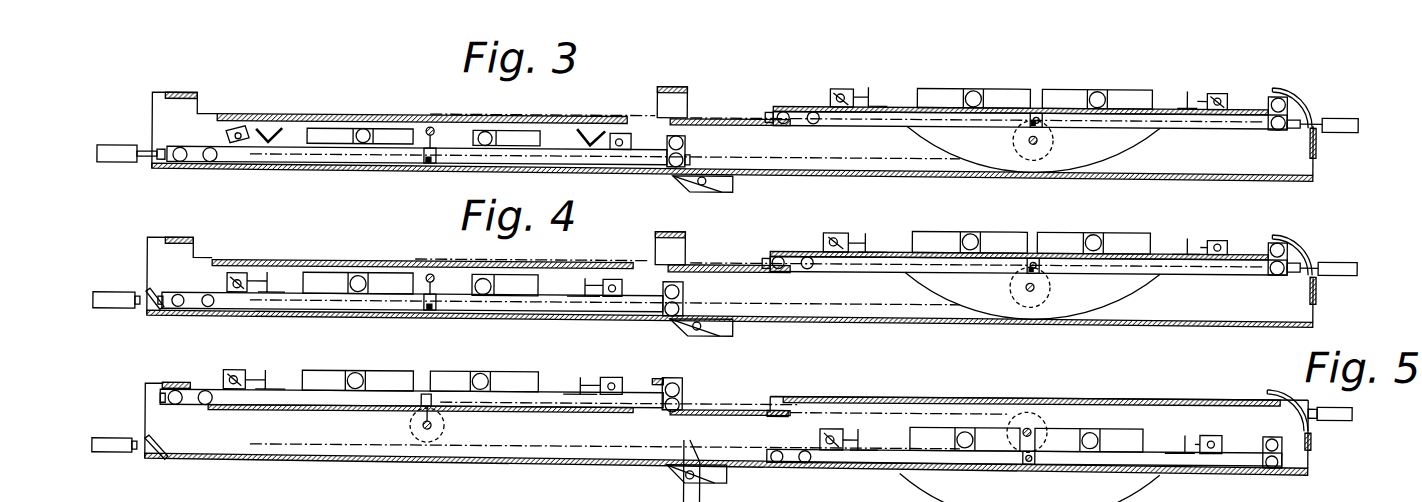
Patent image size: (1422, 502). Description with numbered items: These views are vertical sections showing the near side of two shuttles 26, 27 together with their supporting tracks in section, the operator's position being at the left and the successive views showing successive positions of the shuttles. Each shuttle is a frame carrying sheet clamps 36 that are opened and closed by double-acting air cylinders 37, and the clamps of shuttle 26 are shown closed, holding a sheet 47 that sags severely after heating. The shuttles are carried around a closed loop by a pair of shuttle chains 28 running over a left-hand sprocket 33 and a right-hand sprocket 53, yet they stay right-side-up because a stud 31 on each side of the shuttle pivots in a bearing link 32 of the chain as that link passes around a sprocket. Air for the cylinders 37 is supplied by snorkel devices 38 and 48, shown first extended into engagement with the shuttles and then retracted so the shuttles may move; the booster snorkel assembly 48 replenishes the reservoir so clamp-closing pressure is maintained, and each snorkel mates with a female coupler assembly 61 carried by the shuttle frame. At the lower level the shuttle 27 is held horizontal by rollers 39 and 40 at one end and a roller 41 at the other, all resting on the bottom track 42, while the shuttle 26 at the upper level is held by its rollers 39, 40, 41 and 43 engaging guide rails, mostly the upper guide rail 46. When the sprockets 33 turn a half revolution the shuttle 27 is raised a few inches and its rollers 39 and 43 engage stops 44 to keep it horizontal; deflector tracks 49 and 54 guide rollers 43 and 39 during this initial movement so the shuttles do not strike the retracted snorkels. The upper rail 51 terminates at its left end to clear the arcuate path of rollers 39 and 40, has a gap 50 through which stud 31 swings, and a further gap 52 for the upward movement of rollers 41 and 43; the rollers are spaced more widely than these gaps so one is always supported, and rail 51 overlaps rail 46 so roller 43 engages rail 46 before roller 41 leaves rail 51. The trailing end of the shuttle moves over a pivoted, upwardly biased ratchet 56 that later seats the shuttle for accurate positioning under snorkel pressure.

In FIG. 3, the shuttle 26 is at (988, 93).
In FIG. 4, the shuttle 26 is at (1203, 278).
In FIG. 5, the shuttle 26 is at (1150, 440).
In FIG. 3, the shuttle 27 is at (315, 153).
In FIG. 4, the shuttle 27 is at (333, 306).
In FIG. 5, the shuttle 27 is at (290, 391).
In FIG. 3, the shuttle chains 28 is at (894, 160).
In FIG. 5, the shuttle chains 28 is at (548, 413).
In FIG. 3, the stud 31 is at (425, 163).
In FIG. 4, the stud 31 is at (1030, 256).
In FIG. 3, the bearing link 32 is at (440, 163).
In FIG. 4, the bearing link 32 is at (1040, 260).
In FIG. 3, the sprocket 33 is at (433, 116).
In FIG. 5, the sprocket 33 is at (440, 430).
In FIG. 3, the sheet clamps 36 is at (272, 130).
In FIG. 4, the sheet clamps 36 is at (282, 293).
In FIG. 3, the air cylinders 37 is at (240, 129).
In FIG. 4, the air cylinders 37 is at (244, 276).
In FIG. 3, the snorkel device 38 is at (118, 149).
In FIG. 4, the snorkel device 38 is at (107, 295).
In FIG. 5, the snorkel device 38 is at (113, 457).
In FIG. 3, the roller 39 is at (177, 166).
In FIG. 4, the roller 39 is at (780, 268).
In FIG. 5, the roller 39 is at (177, 409).
In FIG. 3, the roller 40 is at (210, 166).
In FIG. 4, the roller 40 is at (811, 266).
In FIG. 5, the roller 40 is at (207, 409).
In FIG. 3, the roller 41 is at (667, 170).
In FIG. 4, the roller 41 is at (663, 318).
In FIG. 5, the roller 41 is at (686, 406).
In FIG. 3, the bottom track 42 is at (346, 172).
In FIG. 4, the bottom track 42 is at (620, 320).
In FIG. 5, the bottom track 42 is at (1292, 472).
In FIG. 3, the roller 43 is at (686, 136).
In FIG. 4, the roller 43 is at (684, 293).
In FIG. 5, the roller 43 is at (680, 388).
In FIG. 3, the stops 44 is at (183, 95).
In FIG. 5, the stops 44 is at (176, 386).
In FIG. 3, the upper guide rail 46 is at (1102, 92).
In FIG. 4, the upper guide rail 46 is at (1135, 250).
In FIG. 3, the sheet 47 is at (1140, 130).
In FIG. 4, the sheet 47 is at (1122, 284).
In FIG. 5, the sheet 47 is at (1132, 478).
In FIG. 3, the booster snorkel assembly 48 is at (1360, 117).
In FIG. 4, the booster snorkel assembly 48 is at (1342, 272).
In FIG. 5, the booster snorkel assembly 48 is at (1345, 418).
In FIG. 3, the deflector track 49 is at (1305, 104).
In FIG. 4, the deflector track 49 is at (1300, 252).
In FIG. 5, the deflector track 49 is at (1278, 386).
In FIG. 3, the gap 50 is at (428, 128).
In FIG. 4, the gap 50 is at (428, 276).
In FIG. 5, the gap 50 is at (412, 420).
In FIG. 3, the upper rail 51 is at (336, 116).
In FIG. 4, the upper rail 51 is at (348, 263).
In FIG. 5, the upper rail 51 is at (268, 413).
In FIG. 4, the gap 52 is at (650, 268).
In FIG. 3, the sprocket 53 is at (1026, 144).
In FIG. 4, the sprocket 53 is at (1028, 292).
In FIG. 4, the deflector track 54 is at (152, 314).
In FIG. 5, the deflector track 54 is at (150, 440).
In FIG. 3, the ratchet 56 is at (700, 192).
In FIG. 4, the ratchet 56 is at (733, 330).
In FIG. 5, the ratchet 56 is at (705, 488).
In FIG. 3, the female coupler assembly 61 is at (164, 153).
In FIG. 4, the female coupler assembly 61 is at (163, 300).
In FIG. 5, the female coupler assembly 61 is at (158, 400).